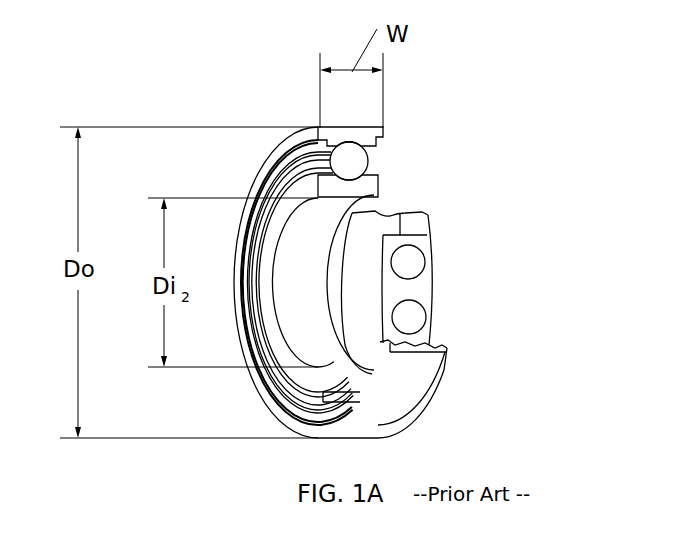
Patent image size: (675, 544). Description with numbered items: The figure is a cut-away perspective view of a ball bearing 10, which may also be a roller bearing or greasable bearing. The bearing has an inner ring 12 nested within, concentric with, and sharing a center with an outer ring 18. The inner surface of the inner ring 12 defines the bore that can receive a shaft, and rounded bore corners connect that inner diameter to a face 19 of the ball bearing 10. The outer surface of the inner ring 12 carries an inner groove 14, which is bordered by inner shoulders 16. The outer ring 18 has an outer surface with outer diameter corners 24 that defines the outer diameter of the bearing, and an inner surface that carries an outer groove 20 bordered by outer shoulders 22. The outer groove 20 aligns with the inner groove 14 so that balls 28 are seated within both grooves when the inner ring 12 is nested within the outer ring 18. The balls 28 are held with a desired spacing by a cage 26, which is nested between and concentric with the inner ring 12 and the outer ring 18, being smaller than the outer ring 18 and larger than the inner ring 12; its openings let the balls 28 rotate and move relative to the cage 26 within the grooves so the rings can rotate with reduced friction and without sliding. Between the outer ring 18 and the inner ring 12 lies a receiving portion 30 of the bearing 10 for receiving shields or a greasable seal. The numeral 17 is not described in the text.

The ball bearing 10 is at (433, 72).
The inner ring 12 is at (368, 184).
The inner groove 14 is at (395, 228).
The inner shoulders 16 is at (378, 171).
The inner ring bore 17 is at (372, 198).
The outer ring 18 is at (367, 137).
The face 19 is at (300, 427).
The outer groove 20 is at (420, 333).
The outer shoulders 22 is at (371, 157).
The outer diameter corners 24 is at (381, 128).
The cage 26 is at (413, 265).
The balls 28 is at (432, 292).
The receiving portion 30 is at (290, 159).